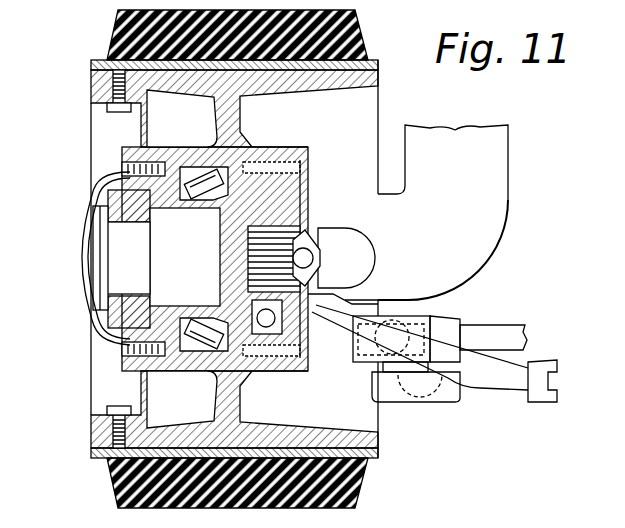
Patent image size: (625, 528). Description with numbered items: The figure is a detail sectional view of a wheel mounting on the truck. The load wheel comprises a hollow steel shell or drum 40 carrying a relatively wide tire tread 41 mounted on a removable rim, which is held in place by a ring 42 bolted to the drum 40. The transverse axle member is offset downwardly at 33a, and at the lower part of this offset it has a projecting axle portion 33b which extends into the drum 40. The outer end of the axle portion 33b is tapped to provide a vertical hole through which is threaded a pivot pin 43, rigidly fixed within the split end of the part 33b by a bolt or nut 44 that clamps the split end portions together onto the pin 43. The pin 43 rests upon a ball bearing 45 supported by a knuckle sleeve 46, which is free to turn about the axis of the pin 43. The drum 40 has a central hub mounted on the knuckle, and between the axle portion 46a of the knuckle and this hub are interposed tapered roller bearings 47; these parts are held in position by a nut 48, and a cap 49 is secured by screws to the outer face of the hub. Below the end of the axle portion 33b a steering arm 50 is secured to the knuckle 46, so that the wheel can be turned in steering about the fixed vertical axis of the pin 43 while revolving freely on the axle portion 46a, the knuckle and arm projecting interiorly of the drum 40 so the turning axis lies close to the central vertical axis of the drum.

The downward offset of axle member 33a is at (493, 140).
The projecting axle portion 33b is at (413, 271).
The drum 40 is at (234, 259).
The tire tread 41 is at (113, 43).
The ring 42 is at (97, 85).
The pivot pin 43 is at (302, 183).
The nut 44 is at (308, 258).
The ball bearing 45 is at (345, 304).
The knuckle sleeve 46 is at (308, 204).
The axle portion of knuckle 46a is at (180, 257).
The tapered roller bearings 47 is at (200, 182).
The nut 48 is at (100, 270).
The cap 49 is at (87, 215).
The steering arm 50 is at (480, 373).